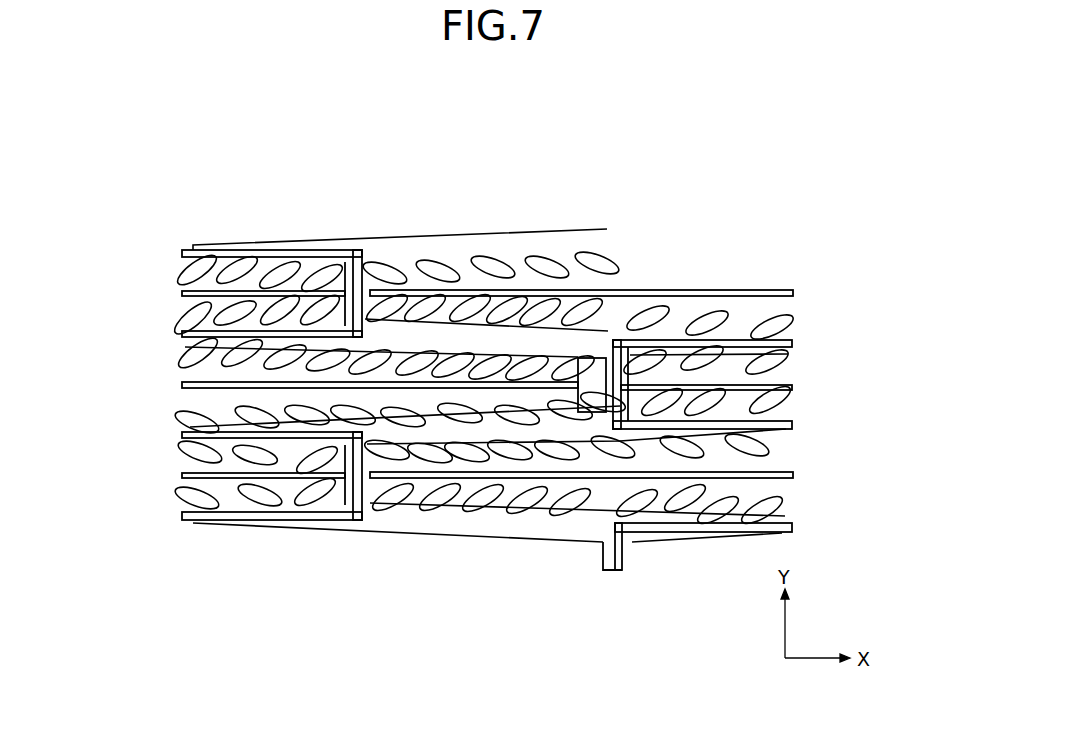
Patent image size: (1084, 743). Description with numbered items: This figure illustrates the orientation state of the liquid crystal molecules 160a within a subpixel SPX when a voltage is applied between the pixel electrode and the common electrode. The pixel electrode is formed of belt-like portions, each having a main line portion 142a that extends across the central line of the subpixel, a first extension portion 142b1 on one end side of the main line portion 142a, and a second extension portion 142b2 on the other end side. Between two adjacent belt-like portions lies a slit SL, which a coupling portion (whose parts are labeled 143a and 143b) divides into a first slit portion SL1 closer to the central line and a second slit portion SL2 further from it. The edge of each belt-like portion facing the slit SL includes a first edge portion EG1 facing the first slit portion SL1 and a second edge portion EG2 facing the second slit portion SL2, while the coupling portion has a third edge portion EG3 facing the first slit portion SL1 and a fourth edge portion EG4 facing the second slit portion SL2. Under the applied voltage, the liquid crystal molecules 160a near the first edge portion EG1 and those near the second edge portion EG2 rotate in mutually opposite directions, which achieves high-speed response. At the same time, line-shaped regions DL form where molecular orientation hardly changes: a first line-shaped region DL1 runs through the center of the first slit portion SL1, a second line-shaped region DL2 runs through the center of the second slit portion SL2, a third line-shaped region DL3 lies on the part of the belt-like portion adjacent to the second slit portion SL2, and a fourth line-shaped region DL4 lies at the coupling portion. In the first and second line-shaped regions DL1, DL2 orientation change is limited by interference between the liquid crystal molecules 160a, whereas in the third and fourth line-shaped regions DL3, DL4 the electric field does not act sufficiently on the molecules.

The subpixel SPX is at (720, 150).
The line-shaped region DL is at (486, 386).
The first line-shaped region DL1 is at (182, 385).
The second line-shaped region DL2 is at (182, 293).
The third line-shaped region DL3 is at (182, 253).
The fourth line-shaped region DL4 is at (363, 265).
The slit SL is at (487, 361).
The first slit portion SL1 is at (212, 371).
The second slit portion SL2 is at (216, 267).
The main line portion 142a is at (446, 245).
The first extension portion 142b1 is at (735, 355).
The second extension portion 142b2 is at (272, 245).
The first portion of electrode 143 143a is at (602, 285).
The second portion of electrode 143 143b is at (386, 295).
The liquid crystal molecules 160a is at (605, 512).
The first edge portion EG1 is at (487, 407).
The second edge portion EG2 is at (720, 410).
The third edge portion EG3 is at (590, 413).
The fourth edge portion EG4 is at (655, 352).